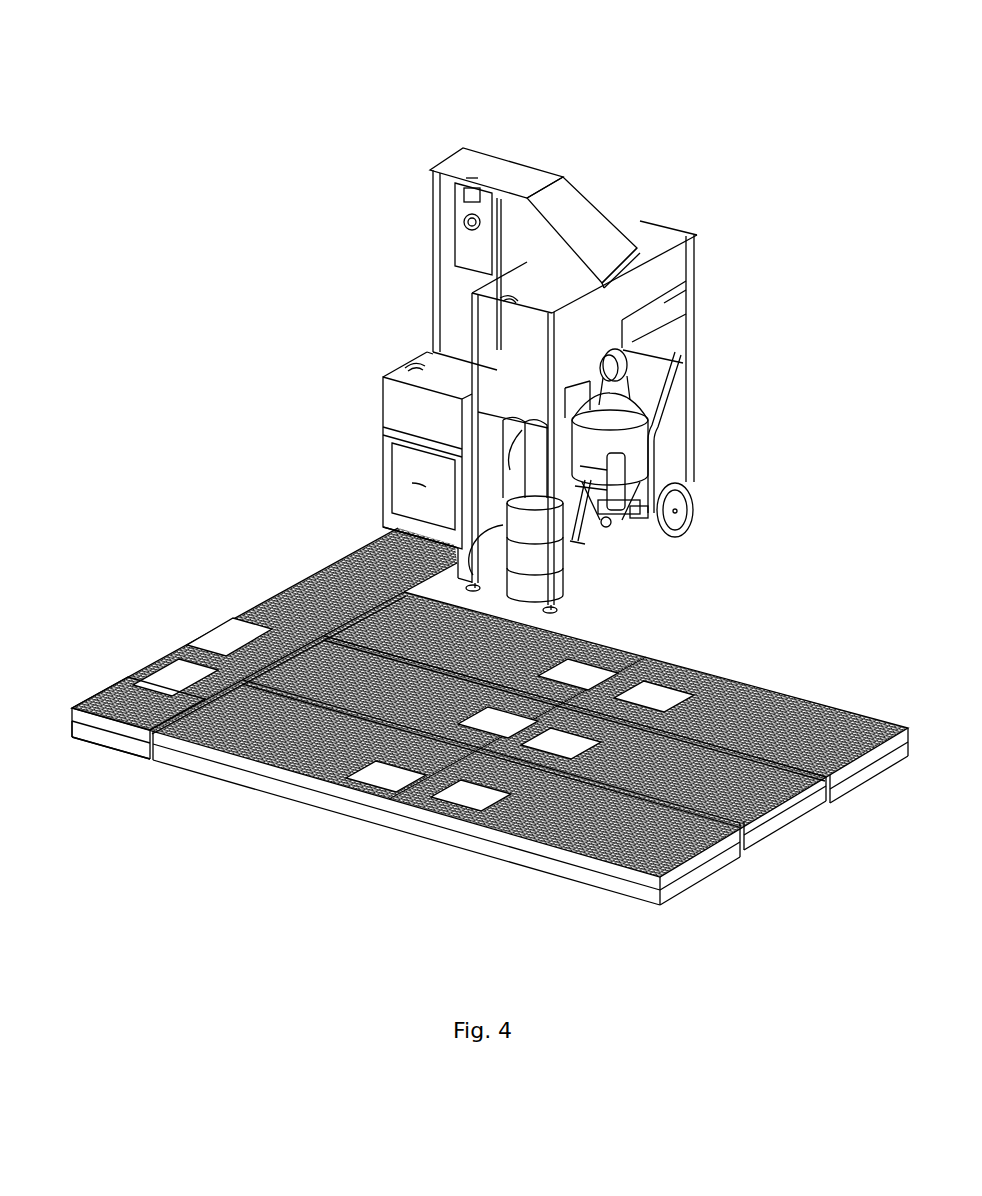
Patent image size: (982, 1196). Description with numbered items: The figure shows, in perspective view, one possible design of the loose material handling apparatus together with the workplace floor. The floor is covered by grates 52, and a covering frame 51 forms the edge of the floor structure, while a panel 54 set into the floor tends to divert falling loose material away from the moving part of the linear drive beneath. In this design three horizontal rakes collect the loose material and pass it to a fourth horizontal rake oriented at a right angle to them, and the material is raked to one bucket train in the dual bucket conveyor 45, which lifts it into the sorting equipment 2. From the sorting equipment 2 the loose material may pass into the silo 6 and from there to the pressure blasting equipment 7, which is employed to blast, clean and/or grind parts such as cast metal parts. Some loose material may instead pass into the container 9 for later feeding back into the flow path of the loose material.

The dual bucket conveyor 45 is at (490, 173).
The sorting equipment 2 is at (498, 343).
The silo 6 is at (643, 318).
The container 9 is at (415, 412).
The pressure blasting equipment 7 is at (653, 460).
The panel 54 is at (238, 647).
The grates 52 is at (130, 712).
The covering frame 51 is at (113, 730).